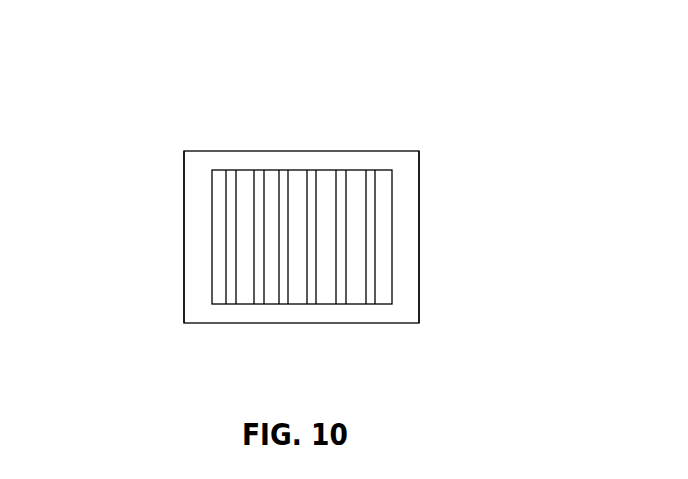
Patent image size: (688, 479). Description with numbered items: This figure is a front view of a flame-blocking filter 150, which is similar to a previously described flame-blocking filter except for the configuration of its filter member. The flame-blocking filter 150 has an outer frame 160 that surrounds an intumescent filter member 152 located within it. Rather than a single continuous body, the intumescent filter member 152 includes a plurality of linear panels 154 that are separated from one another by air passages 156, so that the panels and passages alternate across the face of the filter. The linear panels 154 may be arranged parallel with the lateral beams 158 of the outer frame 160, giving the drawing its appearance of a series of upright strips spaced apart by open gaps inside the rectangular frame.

The flame-blocking filter 150 is at (442, 83).
The intumescent filter member 152 is at (310, 183).
The linear panels 154 is at (254, 200).
The air passages 156 is at (298, 187).
The lateral beams 158 is at (184, 237).
The outer frame 160 is at (419, 151).